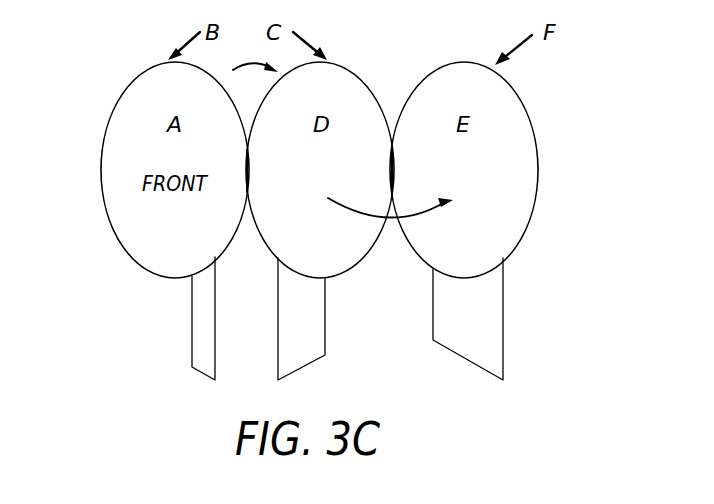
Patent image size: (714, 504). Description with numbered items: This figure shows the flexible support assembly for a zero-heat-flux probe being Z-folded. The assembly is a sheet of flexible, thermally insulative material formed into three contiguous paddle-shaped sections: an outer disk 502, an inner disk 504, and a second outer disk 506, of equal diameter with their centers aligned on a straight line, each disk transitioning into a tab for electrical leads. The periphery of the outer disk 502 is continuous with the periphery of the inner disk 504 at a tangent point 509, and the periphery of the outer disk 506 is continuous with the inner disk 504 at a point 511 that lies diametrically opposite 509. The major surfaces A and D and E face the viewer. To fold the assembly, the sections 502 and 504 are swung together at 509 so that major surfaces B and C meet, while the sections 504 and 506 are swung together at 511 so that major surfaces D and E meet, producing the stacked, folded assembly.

The outer disk 502 is at (115, 242).
The inner disk 504 is at (355, 265).
The outer disk 506 is at (527, 222).
The fold point between outer disk 502 and inner disk 504 509 is at (247, 195).
The fold point between inner disk 504 and outer disk 506 511 is at (392, 152).